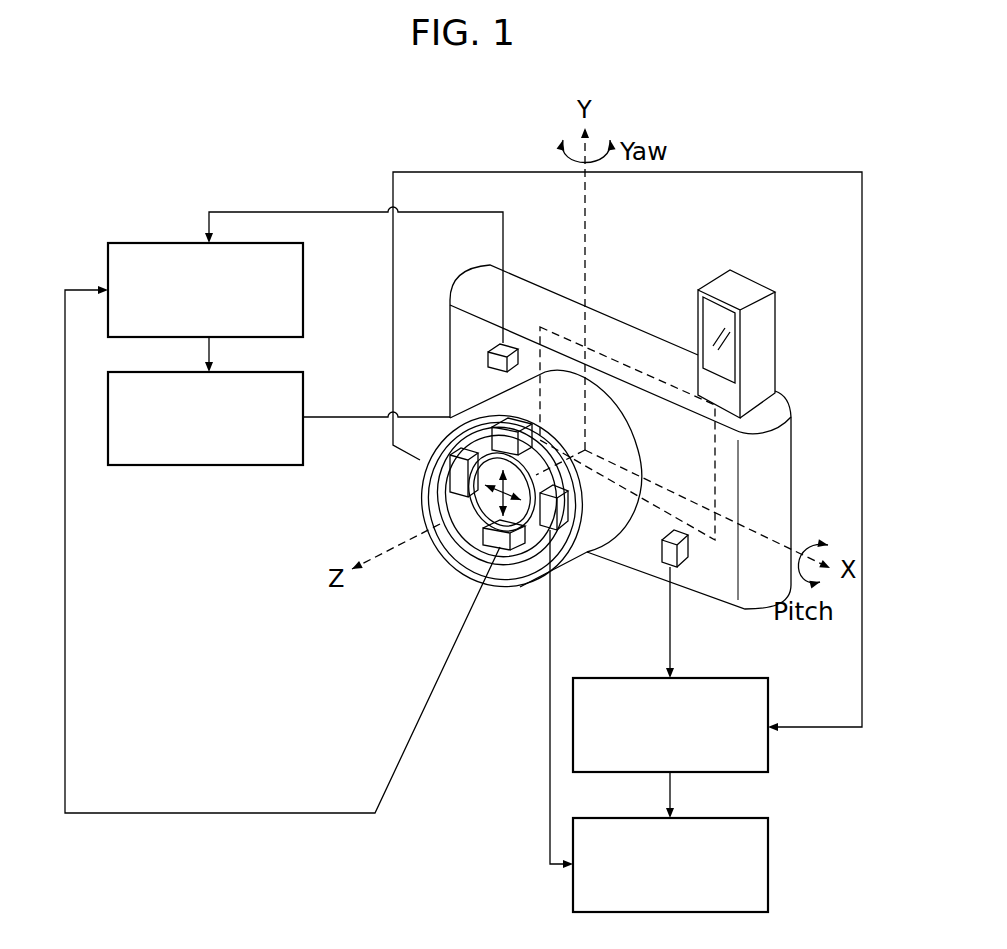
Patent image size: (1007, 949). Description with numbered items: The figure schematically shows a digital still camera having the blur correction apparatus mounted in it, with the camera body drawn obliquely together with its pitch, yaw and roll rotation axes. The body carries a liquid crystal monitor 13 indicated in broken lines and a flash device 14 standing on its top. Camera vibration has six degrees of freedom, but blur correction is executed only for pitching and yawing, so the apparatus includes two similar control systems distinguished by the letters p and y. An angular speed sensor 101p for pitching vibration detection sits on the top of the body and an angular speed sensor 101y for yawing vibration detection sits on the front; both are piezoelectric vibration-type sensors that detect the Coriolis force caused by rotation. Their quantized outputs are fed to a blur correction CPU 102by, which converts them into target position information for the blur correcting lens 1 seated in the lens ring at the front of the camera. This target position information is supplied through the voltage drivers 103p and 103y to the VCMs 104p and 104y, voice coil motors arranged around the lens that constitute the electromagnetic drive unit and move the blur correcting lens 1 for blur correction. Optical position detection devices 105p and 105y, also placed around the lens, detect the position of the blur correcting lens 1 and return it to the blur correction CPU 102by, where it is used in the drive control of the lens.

The blur correcting lens 1 is at (457, 552).
The liquid crystal monitor 13 is at (605, 355).
The flash device 14 is at (770, 323).
The angular speed sensor for pitching vibration detection 101p is at (507, 347).
The angular speed sensor for yawing vibration detection 101y is at (686, 550).
The blur correction CPU 102by is at (150, 242).
The voltage driver for pitch 103p is at (145, 466).
The voltage driver for yaw 103y is at (770, 862).
The VCM for pitch 104p is at (508, 423).
The VCM for yaw 104y is at (560, 527).
The optical position detection device for pitch 105p is at (499, 550).
The optical position detection device for yaw 105y is at (455, 486).